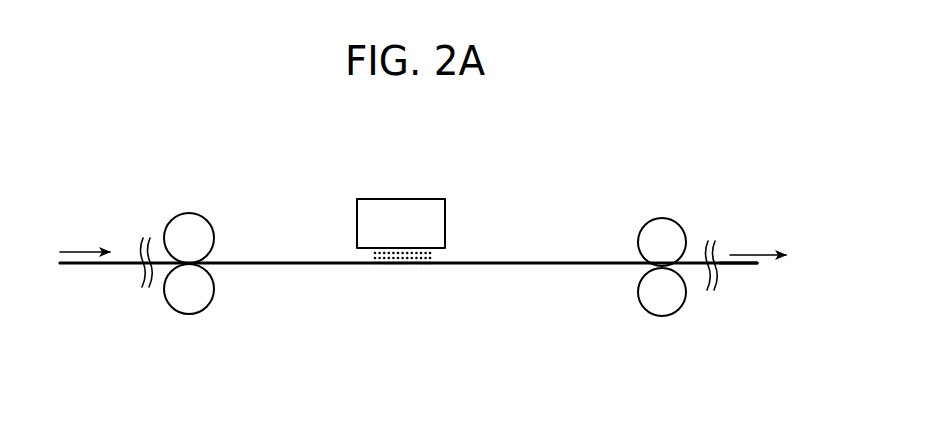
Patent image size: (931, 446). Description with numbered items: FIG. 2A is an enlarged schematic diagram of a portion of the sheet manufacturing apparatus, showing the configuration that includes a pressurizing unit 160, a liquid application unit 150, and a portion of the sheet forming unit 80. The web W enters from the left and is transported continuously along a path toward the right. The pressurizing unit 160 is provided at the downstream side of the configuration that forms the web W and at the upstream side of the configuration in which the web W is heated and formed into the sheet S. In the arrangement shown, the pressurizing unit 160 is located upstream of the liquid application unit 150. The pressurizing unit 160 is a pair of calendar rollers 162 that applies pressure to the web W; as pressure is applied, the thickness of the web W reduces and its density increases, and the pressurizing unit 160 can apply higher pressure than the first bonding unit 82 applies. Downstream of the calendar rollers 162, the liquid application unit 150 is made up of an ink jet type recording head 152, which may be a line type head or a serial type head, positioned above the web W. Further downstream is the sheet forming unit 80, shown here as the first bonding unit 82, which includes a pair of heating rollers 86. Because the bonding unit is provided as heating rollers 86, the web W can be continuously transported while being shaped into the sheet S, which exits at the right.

The web W is at (283, 262).
The sheet S is at (740, 268).
The pressurizing unit 160 is at (215, 266).
The calendar rollers 162 is at (197, 240).
The liquid application unit 150 is at (422, 198).
The recording head 152 is at (398, 213).
The sheet forming unit 80 is at (652, 265).
The first bonding unit 82 is at (636, 265).
The heating rollers 86 is at (650, 242).